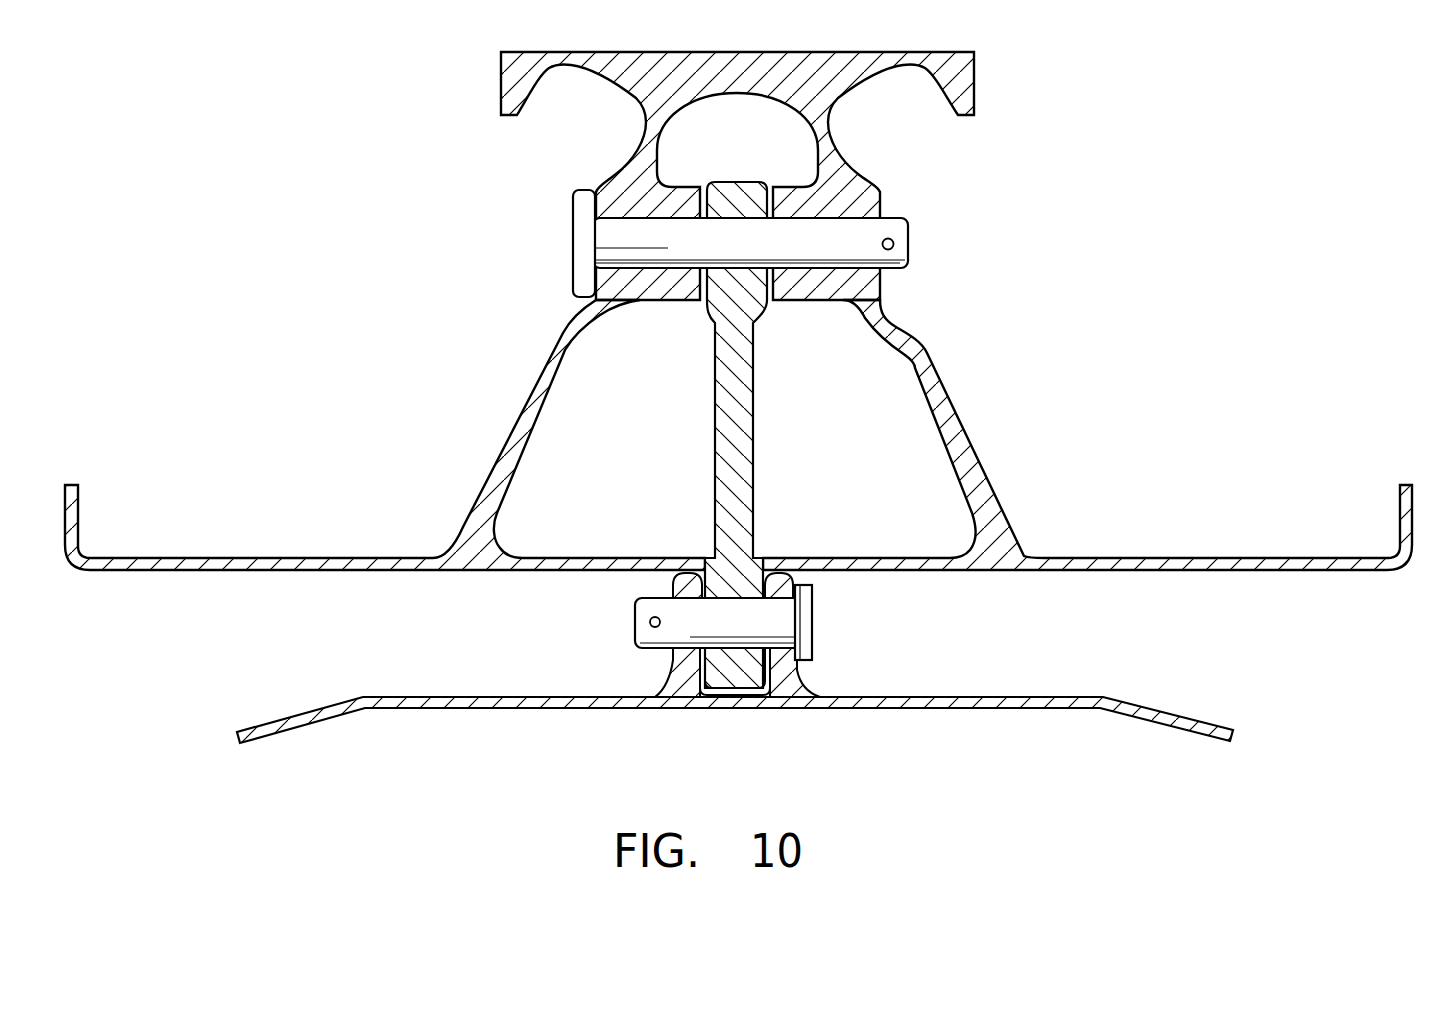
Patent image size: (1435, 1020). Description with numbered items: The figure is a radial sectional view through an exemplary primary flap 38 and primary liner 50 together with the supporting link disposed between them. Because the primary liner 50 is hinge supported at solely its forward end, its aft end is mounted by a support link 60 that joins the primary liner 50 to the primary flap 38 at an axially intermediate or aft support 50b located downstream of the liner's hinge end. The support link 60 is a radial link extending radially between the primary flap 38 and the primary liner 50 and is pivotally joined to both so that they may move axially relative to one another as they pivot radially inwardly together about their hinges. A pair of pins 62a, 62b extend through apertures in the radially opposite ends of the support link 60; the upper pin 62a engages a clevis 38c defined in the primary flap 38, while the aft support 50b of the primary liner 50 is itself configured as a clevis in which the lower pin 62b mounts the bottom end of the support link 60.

The primary flap 38 is at (940, 379).
The clevis 38c is at (847, 184).
The support link 60 is at (755, 362).
The pin 62a is at (897, 260).
The pin 62b is at (634, 622).
The primary liner 50 is at (1050, 697).
The aft support 50b is at (802, 680).